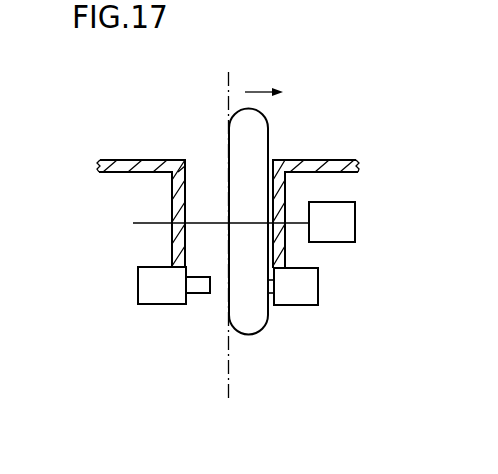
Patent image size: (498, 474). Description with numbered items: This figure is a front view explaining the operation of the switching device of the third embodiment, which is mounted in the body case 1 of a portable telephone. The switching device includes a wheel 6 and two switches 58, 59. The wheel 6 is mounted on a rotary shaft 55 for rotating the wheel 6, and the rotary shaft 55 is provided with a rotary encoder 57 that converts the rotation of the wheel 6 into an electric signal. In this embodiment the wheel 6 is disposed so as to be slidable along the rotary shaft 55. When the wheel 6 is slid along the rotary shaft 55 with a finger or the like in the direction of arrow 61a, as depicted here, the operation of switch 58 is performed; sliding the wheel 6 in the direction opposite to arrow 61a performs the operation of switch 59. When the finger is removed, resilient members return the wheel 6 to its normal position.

The body case 1 is at (317, 167).
The wheel 6 is at (250, 312).
The rotary shaft 55 is at (145, 224).
The rotary encoder 57 is at (334, 222).
The switch 58 is at (294, 283).
The switch 59 is at (162, 285).
The arrow 61a is at (257, 87).